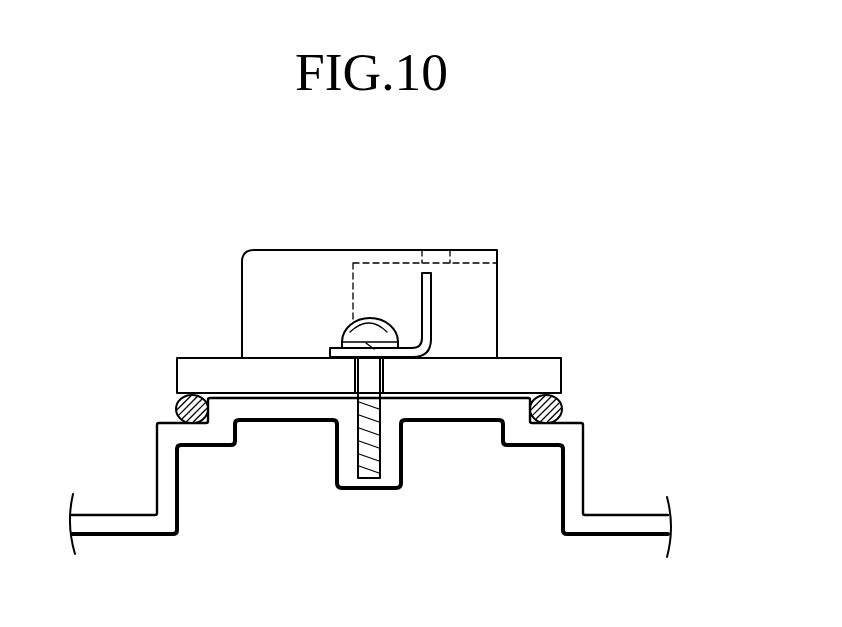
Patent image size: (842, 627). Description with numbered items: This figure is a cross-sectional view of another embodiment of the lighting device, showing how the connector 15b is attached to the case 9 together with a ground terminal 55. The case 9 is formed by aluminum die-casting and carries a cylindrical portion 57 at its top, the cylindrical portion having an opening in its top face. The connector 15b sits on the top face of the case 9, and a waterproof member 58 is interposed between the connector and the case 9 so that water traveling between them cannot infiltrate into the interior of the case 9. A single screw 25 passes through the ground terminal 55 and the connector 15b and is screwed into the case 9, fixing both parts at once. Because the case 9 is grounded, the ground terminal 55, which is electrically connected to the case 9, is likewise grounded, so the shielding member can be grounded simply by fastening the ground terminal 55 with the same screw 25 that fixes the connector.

The case 9 is at (587, 467).
The cylindrical portion 57 is at (153, 470).
The waterproof member 58 is at (562, 403).
The connector 15b is at (387, 250).
The ground terminal 55 is at (431, 302).
The screw 25 is at (348, 327).